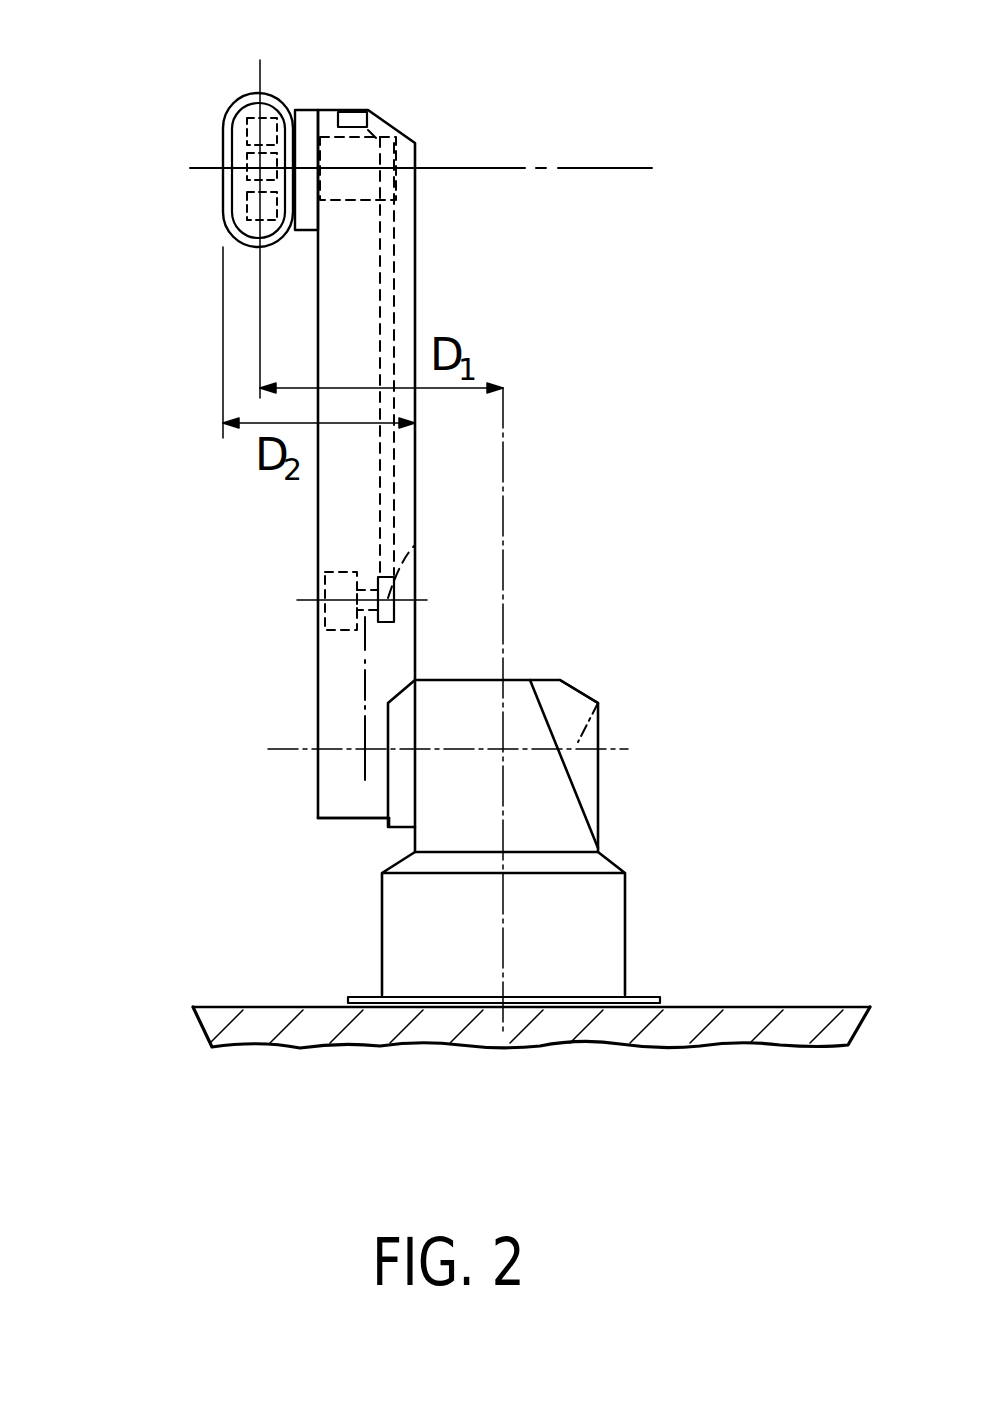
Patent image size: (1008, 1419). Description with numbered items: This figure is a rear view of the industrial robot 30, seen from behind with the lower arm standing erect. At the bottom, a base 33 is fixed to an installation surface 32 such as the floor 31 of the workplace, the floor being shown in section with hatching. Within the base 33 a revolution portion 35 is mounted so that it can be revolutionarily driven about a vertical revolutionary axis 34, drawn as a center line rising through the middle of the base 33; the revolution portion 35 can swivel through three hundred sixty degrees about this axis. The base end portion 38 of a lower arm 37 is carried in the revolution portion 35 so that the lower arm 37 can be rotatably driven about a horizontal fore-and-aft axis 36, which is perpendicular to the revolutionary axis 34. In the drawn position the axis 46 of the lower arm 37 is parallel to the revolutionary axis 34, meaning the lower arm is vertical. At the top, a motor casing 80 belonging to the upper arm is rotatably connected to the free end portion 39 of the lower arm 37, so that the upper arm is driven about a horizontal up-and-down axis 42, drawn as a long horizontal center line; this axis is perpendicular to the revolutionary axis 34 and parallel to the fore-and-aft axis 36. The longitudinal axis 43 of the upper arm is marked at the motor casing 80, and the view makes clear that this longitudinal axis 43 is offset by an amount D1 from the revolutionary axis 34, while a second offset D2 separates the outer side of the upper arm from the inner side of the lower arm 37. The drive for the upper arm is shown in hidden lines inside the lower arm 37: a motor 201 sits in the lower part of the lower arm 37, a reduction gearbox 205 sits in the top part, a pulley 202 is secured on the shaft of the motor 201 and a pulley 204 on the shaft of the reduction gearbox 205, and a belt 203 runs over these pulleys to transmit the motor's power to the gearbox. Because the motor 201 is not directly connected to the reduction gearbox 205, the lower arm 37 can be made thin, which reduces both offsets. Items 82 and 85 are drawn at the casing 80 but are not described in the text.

The industrial robot 30 is at (640, 605).
The floor 31 is at (305, 1018).
The installation surface 32 is at (645, 1013).
The base 33 is at (600, 905).
The revolutionary axis 34 is at (503, 582).
The revolution portion 35 is at (560, 808).
The fore-and-aft axis 36 is at (598, 703).
The lower arm 37 is at (328, 536).
The base end portion 38 is at (328, 797).
The free end portion 39 is at (408, 135).
The up-and-down axis 42 is at (648, 88).
The longitudinal axis 43 is at (258, 170).
The axis of the lower arm 46 is at (363, 655).
The motor casing 80 is at (276, 101).
The connector housing 82 is at (247, 122).
The contact terminals 85 is at (247, 153).
The motor 201 is at (322, 590).
The pulley 202 is at (390, 598).
The belt 203 is at (415, 280).
The pulley 204 is at (415, 195).
The reduction gearbox 205 is at (385, 118).